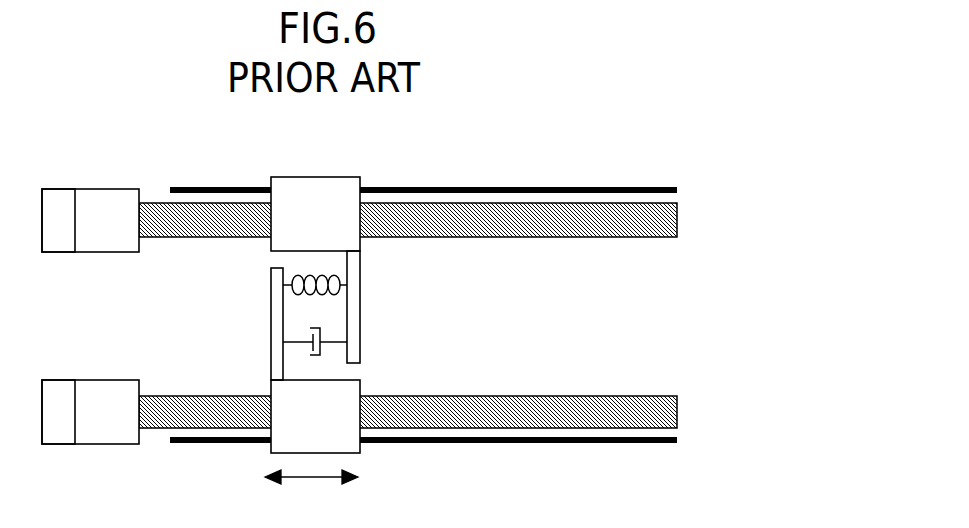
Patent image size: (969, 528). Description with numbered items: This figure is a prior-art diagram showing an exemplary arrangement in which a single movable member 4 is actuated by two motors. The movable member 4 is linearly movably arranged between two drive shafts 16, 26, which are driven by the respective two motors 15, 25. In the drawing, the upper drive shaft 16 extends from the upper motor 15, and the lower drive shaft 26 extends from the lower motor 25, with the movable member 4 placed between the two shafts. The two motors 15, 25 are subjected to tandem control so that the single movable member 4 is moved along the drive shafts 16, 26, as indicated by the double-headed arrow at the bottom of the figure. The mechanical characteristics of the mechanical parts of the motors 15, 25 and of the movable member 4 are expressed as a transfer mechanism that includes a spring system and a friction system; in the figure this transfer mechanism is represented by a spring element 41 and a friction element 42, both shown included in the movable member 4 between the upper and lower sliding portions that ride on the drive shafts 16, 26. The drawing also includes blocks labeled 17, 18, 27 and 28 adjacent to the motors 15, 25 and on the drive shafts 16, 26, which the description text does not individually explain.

The movable member 4 is at (293, 316).
The motor 15 is at (107, 189).
The drive shaft 16 is at (408, 215).
The first end block 17 is at (58, 189).
The first slider 18 is at (311, 177).
The motor 25 is at (107, 380).
The drive shaft 26 is at (452, 395).
The second end block 27 is at (58, 380).
The second slider 28 is at (355, 440).
The spring element 41 is at (338, 292).
The friction element 42 is at (336, 349).